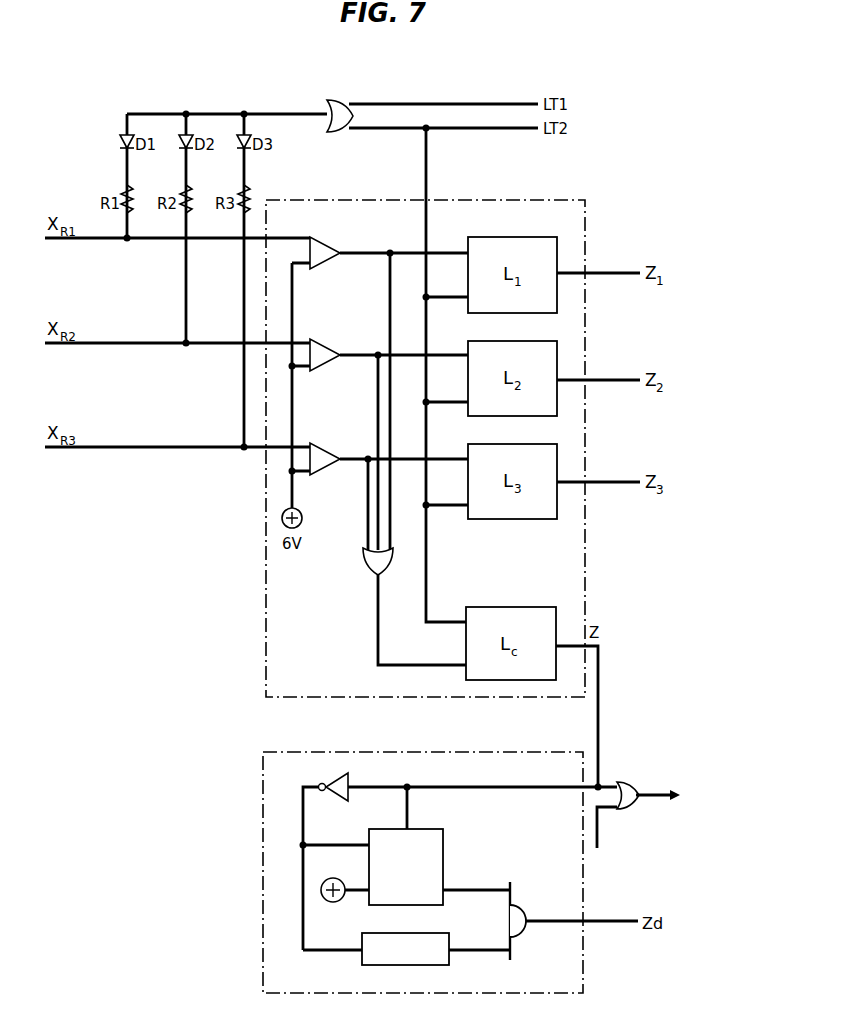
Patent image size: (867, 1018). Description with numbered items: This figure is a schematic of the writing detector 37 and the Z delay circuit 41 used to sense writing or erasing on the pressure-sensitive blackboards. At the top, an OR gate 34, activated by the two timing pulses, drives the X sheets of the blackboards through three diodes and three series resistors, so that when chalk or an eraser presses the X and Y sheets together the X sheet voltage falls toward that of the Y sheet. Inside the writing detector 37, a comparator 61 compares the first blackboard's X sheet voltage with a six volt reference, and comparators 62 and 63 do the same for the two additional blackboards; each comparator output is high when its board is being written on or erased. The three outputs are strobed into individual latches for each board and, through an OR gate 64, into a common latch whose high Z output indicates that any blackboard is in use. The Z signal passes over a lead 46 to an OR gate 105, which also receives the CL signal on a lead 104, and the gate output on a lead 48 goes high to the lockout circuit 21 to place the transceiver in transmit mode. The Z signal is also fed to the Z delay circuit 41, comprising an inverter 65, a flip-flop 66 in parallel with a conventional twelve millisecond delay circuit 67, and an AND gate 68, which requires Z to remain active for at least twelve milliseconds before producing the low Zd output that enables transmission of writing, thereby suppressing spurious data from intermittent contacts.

The OR gate 34 is at (431, 107).
The writing detector 37 is at (577, 229).
The Z delay circuit 41 is at (272, 904).
The lead 46 is at (600, 662).
The lead 48 is at (656, 800).
The comparator 61 is at (389, 385).
The comparator 62 is at (389, 436).
The comparator 63 is at (389, 488).
The OR gate 64 is at (404, 606).
The inverter 65 is at (342, 780).
The flip-flop 66 is at (433, 866).
The delay circuit 67 is at (362, 956).
The AND gate 68 is at (574, 921).
The lead 104 is at (614, 836).
The OR gate 105 is at (628, 785).
The lockout circuit 21 is at (719, 796).